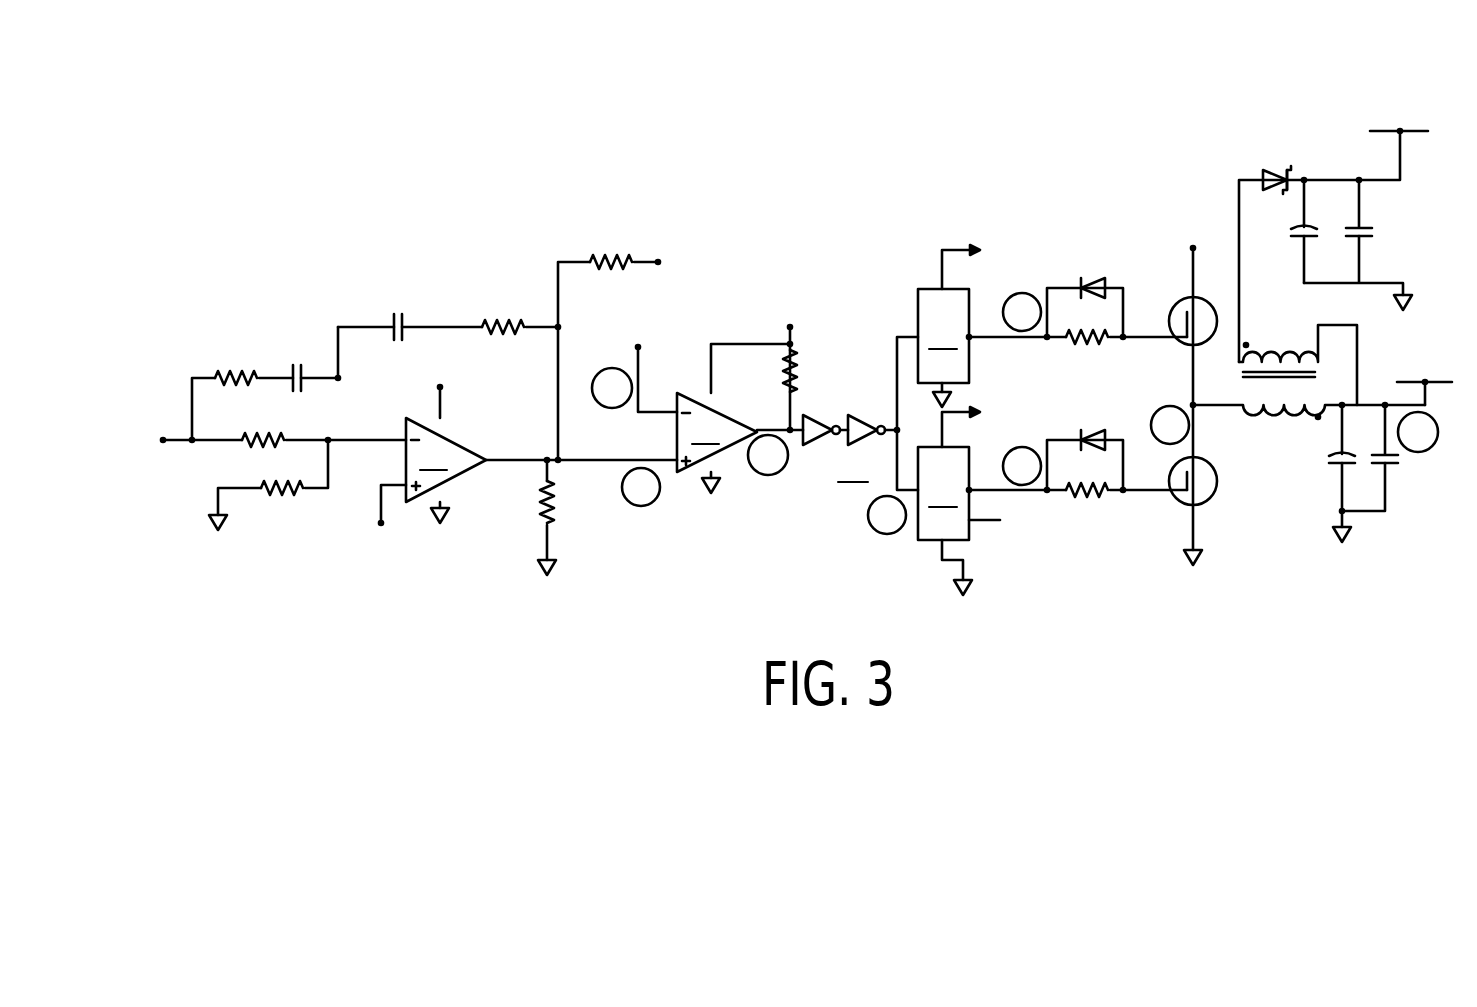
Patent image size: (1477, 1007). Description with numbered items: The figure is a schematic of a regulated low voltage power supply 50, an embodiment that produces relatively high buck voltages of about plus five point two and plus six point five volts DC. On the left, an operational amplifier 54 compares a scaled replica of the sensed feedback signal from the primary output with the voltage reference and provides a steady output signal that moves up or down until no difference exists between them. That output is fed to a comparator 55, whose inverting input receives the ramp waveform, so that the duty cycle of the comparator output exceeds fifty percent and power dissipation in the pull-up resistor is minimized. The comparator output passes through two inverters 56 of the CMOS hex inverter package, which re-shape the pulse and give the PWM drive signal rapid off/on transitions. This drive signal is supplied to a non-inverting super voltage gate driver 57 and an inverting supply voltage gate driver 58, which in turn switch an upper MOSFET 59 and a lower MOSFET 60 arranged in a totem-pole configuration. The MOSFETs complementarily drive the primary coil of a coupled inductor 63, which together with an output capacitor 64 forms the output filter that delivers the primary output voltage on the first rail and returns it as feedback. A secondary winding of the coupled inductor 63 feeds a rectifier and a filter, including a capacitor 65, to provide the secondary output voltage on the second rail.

The power supply 50 is at (831, 136).
The operational amplifier 54 is at (447, 473).
The comparator 55 is at (688, 474).
The inverters 56 is at (855, 416).
The super voltage gate driver 57 is at (930, 289).
The supply voltage gate driver 58 is at (926, 546).
The upper MOSFET 59 is at (1185, 300).
The lower MOSFET 60 is at (1186, 506).
The coupled inductor 63 is at (1308, 410).
The output capacitor 64 is at (1330, 463).
The 150 microfarad capacitor 65 is at (1305, 226).